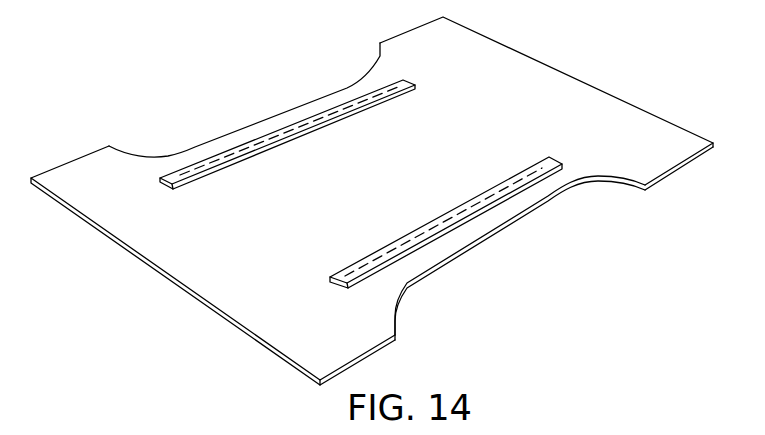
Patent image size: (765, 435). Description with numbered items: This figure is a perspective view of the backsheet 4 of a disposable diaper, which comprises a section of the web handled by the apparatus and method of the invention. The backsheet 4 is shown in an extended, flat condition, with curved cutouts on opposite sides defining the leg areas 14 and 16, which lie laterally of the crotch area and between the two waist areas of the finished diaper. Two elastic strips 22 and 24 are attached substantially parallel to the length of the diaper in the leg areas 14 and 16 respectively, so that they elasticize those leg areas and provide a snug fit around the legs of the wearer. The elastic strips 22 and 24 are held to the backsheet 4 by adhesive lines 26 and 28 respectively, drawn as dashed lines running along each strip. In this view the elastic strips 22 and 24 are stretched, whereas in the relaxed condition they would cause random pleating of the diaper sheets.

The backsheet 4 is at (529, 97).
The leg area 14 is at (267, 110).
The leg area 16 is at (477, 248).
The elastic strip 22 is at (273, 102).
The elastic strip 24 is at (478, 260).
The adhesive line 26 is at (316, 115).
The adhesive line 28 is at (433, 230).